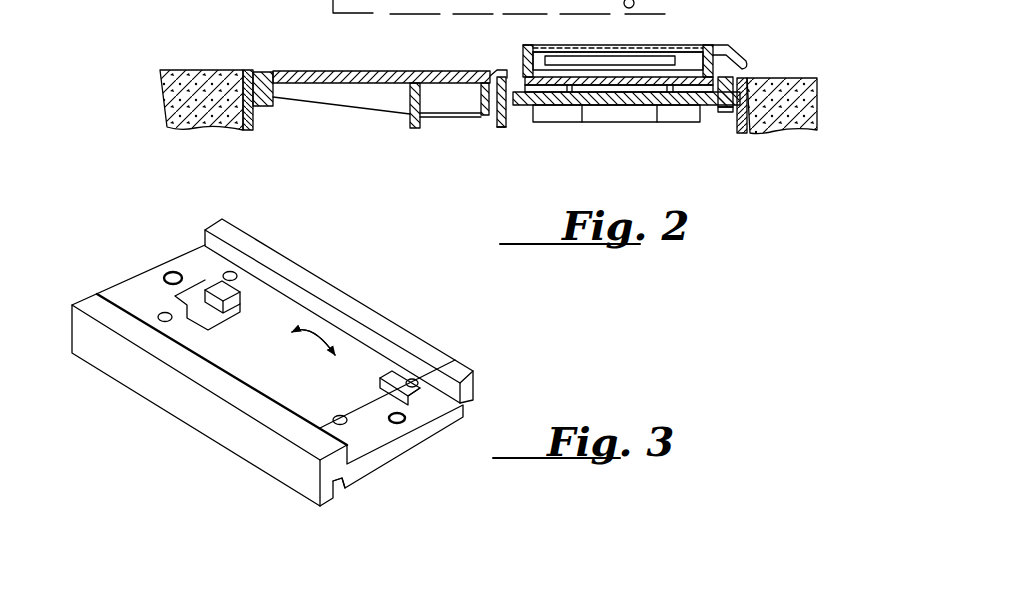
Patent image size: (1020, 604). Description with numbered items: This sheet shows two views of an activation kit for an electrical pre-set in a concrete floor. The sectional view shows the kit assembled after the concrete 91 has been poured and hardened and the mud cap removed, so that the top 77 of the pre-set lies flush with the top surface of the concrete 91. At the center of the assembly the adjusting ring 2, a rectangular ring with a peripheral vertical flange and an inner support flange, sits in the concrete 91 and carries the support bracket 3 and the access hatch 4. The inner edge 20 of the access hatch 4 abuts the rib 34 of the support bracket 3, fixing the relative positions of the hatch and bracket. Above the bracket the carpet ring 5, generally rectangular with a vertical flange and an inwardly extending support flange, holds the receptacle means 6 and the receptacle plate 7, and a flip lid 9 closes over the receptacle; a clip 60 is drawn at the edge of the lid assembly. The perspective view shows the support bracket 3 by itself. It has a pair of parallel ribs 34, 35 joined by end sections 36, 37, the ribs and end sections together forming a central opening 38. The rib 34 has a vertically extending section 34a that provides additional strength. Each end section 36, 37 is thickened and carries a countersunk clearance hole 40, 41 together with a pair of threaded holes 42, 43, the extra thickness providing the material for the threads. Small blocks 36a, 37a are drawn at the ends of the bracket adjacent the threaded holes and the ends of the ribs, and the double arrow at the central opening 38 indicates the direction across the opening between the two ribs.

In FIG. 2, the adjusting ring 2 is at (254, 72).
In FIG. 2, the support bracket 3 is at (543, 103).
In FIG. 3, the support bracket 3 is at (122, 250).
In FIG. 2, the access hatch 4 is at (364, 68).
In FIG. 2, the carpet ring 5 is at (634, 86).
In FIG. 2, the receptacle means 6 is at (693, 50).
In FIG. 2, the receptacle plate 7 is at (548, 64).
In FIG. 2, the flip lid 9 is at (674, 44).
In FIG. 2, the inner edge of the hatch 20 is at (491, 80).
In FIG. 2, the rib 34 is at (514, 53).
In FIG. 3, the rib 34 is at (242, 393).
In FIG. 2, the vertically extending section 34a is at (496, 122).
In FIG. 3, the vertically extending section 34a is at (323, 487).
In FIG. 3, the rib 35 is at (300, 266).
In FIG. 3, the end section 36 is at (126, 286).
In FIG. 3, the stop block 36a is at (222, 283).
In FIG. 3, the end section 37 is at (440, 403).
In FIG. 3, the corner 37a is at (462, 369).
In FIG. 3, the central opening 38 is at (296, 357).
In FIG. 3, the countersunk clearance hole 40 is at (170, 271).
In FIG. 3, the countersunk clearance hole 41 is at (403, 420).
In FIG. 3, the threaded holes 42 is at (240, 314).
In FIG. 3, the threaded holes 43 is at (395, 373).
In FIG. 2, the clip 60 is at (742, 63).
In FIG. 2, the top 77 is at (247, 113).
In FIG. 2, the concrete 91 is at (198, 92).